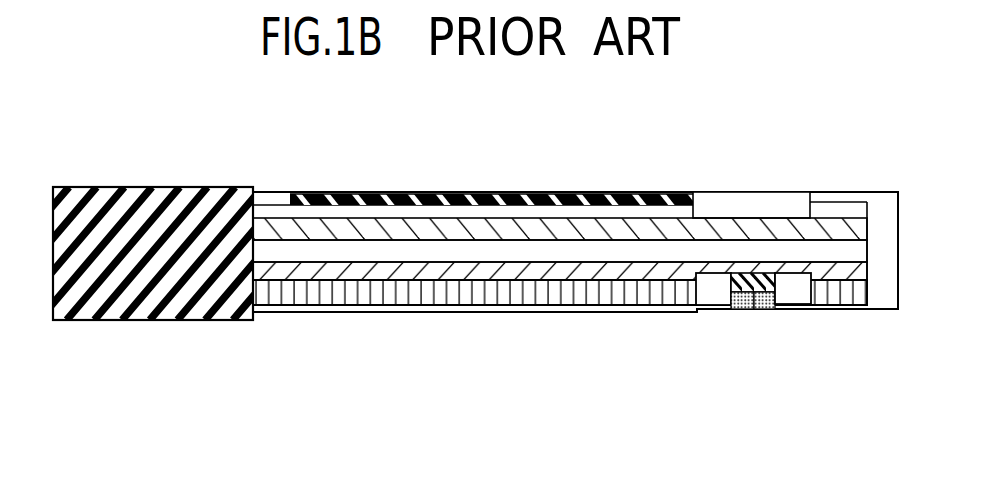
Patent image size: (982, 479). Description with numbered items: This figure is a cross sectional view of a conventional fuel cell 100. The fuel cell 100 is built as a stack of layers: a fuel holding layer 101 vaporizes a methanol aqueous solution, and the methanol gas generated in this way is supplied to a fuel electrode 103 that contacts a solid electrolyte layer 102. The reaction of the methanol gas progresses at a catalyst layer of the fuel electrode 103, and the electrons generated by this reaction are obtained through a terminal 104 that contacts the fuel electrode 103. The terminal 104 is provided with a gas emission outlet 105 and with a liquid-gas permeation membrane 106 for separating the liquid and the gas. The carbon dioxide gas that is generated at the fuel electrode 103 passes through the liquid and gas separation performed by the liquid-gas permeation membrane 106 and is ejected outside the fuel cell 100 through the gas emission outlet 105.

The fuel cell 100 is at (180, 168).
The fuel holding layer 101 is at (560, 288).
The solid electrolyte layer 102 is at (367, 247).
The fuel electrode 103 is at (471, 268).
The terminal 104 is at (790, 287).
The gas emission outlet 105 is at (757, 310).
The liquid-gas permeation membrane 106 is at (743, 310).